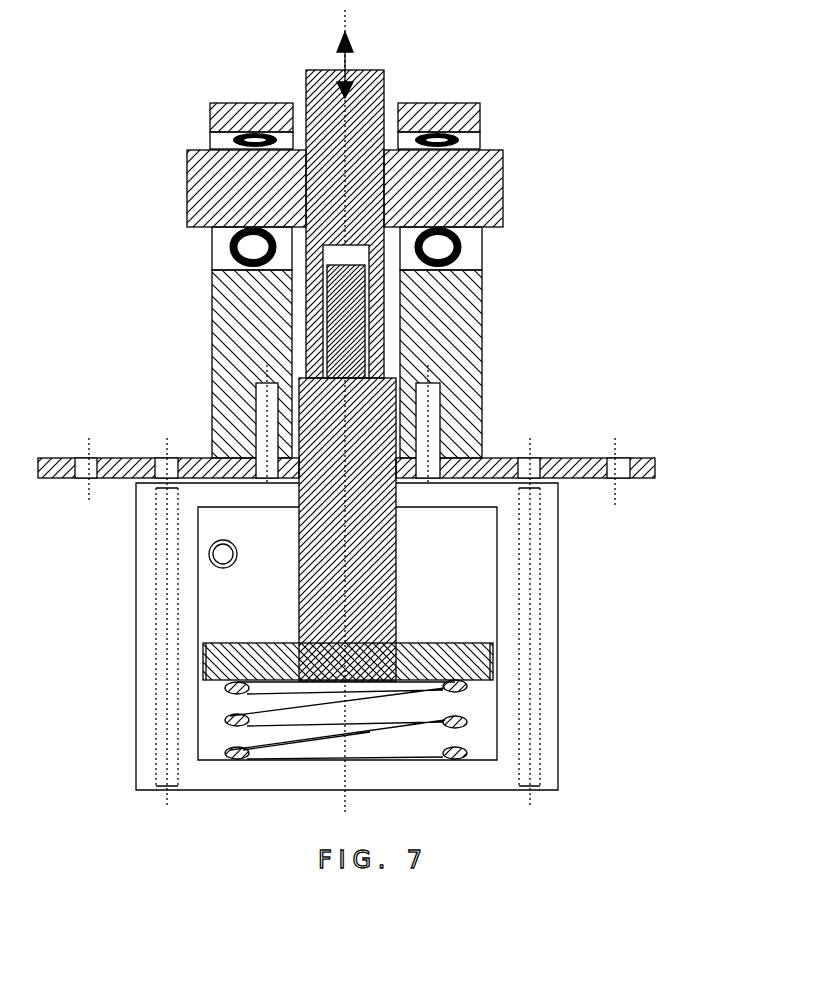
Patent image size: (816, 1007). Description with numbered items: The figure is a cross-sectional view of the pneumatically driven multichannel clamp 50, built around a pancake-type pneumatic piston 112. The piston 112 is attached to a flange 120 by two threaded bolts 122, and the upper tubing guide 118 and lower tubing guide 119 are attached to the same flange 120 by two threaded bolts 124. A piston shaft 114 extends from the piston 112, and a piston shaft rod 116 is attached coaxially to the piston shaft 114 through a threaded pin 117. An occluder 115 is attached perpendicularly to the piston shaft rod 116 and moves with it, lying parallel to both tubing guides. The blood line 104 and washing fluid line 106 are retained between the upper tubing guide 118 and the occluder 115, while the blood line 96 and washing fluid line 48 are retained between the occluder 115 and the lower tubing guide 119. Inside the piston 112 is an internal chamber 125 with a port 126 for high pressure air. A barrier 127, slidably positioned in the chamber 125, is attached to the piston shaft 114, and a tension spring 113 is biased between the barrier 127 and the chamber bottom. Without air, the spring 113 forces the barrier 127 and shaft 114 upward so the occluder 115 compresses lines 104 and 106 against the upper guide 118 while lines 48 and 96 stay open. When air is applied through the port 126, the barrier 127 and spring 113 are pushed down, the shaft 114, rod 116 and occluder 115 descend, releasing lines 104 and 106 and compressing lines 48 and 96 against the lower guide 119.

The multichannel clamp 50 is at (620, 170).
The piston shaft rod 116 is at (313, 70).
The threaded pin 117 is at (328, 348).
The upper tubing guide 118 is at (220, 100).
The blood line 104 is at (212, 142).
The washing fluid line 106 is at (482, 142).
The occluder 115 is at (187, 188).
The lower tubing guide 119 is at (227, 284).
The blood line 96 is at (243, 245).
The washing fluid line 48 is at (447, 242).
The flange 120 is at (647, 455).
The threaded bolts 124 is at (437, 377).
The threaded bolts 122 is at (530, 447).
The pneumatic piston 112 is at (132, 752).
The internal chamber 125 is at (485, 585).
The port 126 is at (207, 556).
The barrier 127 is at (477, 677).
The piston shaft 114 is at (300, 600).
The tension spring 113 is at (230, 717).